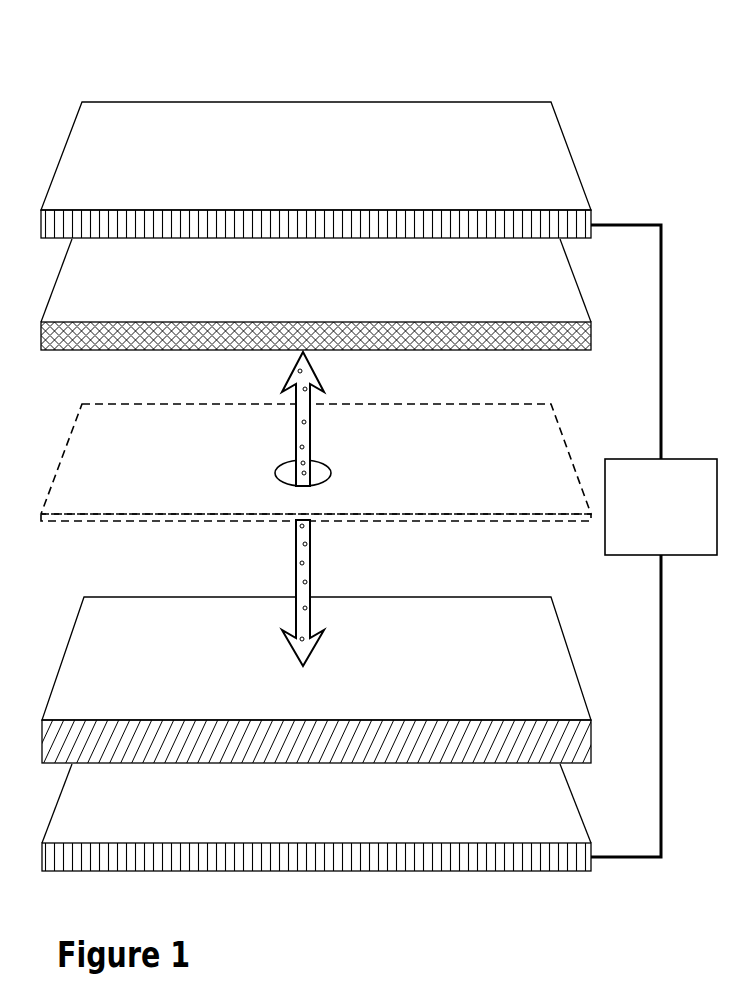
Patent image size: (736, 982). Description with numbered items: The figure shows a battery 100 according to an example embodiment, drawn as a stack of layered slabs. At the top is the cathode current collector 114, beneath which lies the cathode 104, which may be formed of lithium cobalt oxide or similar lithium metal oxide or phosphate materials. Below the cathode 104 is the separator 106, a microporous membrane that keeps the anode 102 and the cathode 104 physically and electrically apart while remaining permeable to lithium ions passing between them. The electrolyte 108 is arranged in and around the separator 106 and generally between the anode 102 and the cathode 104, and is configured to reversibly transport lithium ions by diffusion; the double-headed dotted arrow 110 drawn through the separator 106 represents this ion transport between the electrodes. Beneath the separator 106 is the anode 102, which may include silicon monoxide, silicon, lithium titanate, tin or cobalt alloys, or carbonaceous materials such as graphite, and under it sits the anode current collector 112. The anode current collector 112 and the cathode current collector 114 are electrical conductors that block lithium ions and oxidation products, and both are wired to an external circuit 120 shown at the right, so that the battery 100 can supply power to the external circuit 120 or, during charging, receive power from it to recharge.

The battery 100 is at (355, 63).
The anode 102 is at (136, 708).
The cathode 104 is at (158, 310).
The separator 106 is at (161, 504).
The electrolyte 108 is at (95, 381).
The ion flow 110 is at (311, 570).
The anode current collector 112 is at (173, 838).
The cathode current collector 114 is at (173, 202).
The external circuit 120 is at (697, 526).